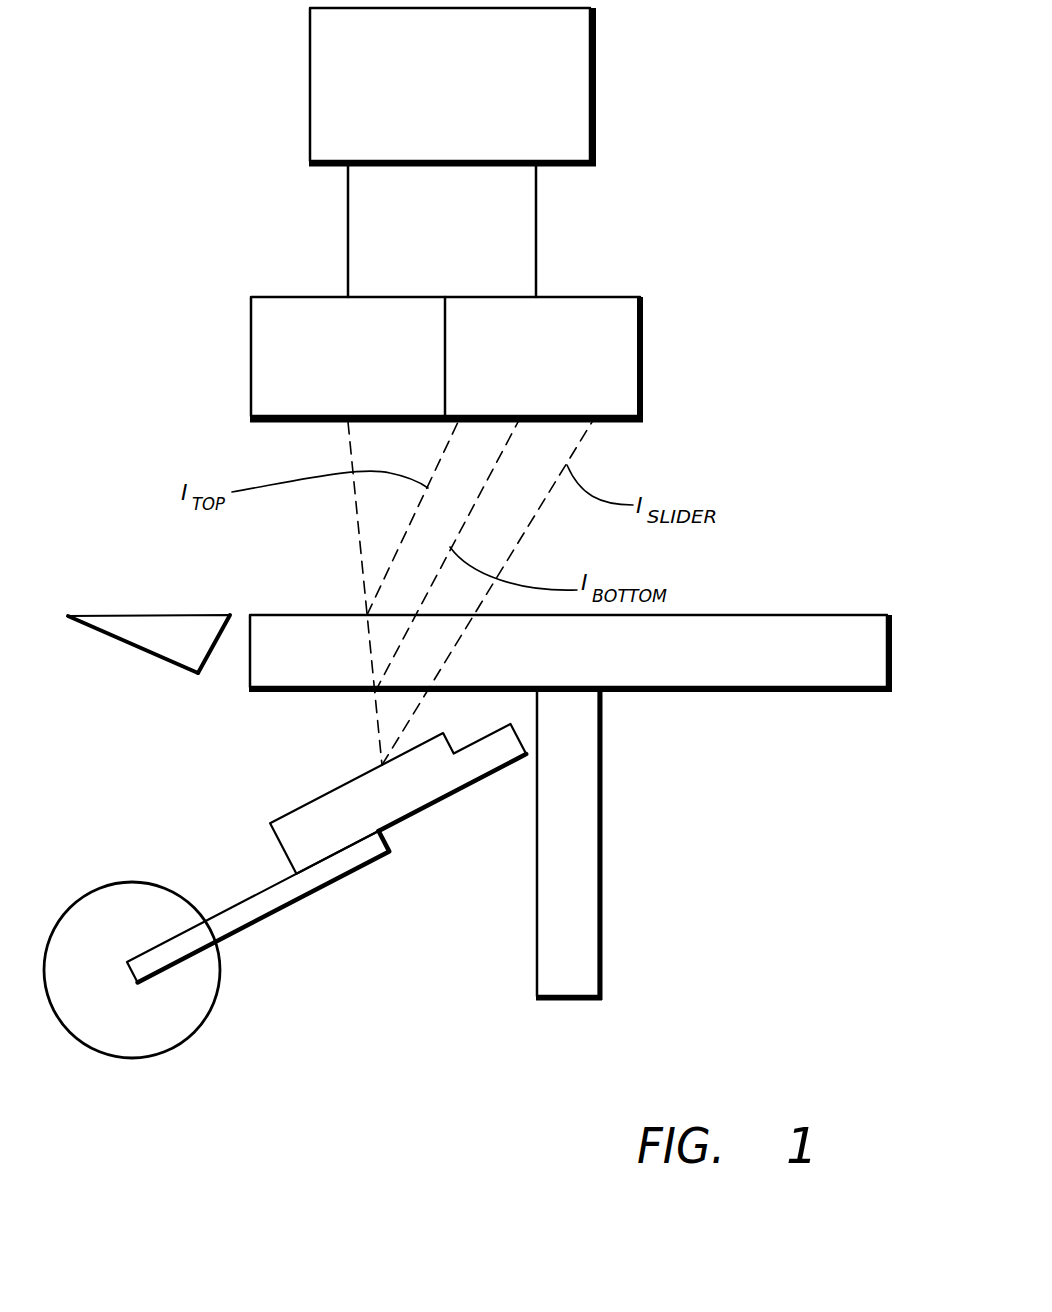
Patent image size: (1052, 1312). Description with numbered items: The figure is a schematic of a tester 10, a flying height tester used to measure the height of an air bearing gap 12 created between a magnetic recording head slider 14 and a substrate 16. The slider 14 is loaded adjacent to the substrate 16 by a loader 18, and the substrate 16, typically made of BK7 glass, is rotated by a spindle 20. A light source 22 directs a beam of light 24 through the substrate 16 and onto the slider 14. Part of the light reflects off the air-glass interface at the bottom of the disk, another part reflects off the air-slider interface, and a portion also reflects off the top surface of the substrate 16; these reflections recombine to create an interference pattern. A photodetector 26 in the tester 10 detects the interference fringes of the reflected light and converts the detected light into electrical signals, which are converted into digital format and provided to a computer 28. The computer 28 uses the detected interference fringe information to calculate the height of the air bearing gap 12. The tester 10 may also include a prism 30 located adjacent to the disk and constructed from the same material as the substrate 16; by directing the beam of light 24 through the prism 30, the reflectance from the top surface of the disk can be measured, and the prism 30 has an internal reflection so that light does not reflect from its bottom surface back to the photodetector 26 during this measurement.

The tester 10 is at (716, 228).
The air bearing gap 12 is at (447, 712).
The magnetic recording head slider 14 is at (407, 788).
The substrate 16 is at (783, 665).
The loader 18 is at (163, 1023).
The spindle 20 is at (577, 932).
The light source 22 is at (325, 397).
The beam of light 24 is at (357, 542).
The photodetector 26 is at (513, 397).
The computer 28 is at (425, 111).
The prism 30 is at (163, 658).